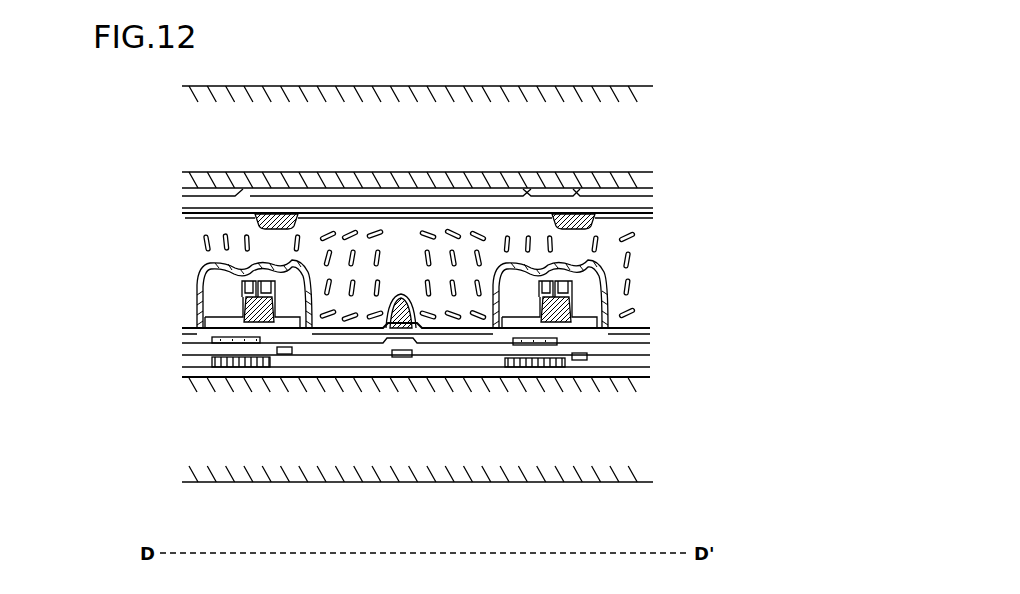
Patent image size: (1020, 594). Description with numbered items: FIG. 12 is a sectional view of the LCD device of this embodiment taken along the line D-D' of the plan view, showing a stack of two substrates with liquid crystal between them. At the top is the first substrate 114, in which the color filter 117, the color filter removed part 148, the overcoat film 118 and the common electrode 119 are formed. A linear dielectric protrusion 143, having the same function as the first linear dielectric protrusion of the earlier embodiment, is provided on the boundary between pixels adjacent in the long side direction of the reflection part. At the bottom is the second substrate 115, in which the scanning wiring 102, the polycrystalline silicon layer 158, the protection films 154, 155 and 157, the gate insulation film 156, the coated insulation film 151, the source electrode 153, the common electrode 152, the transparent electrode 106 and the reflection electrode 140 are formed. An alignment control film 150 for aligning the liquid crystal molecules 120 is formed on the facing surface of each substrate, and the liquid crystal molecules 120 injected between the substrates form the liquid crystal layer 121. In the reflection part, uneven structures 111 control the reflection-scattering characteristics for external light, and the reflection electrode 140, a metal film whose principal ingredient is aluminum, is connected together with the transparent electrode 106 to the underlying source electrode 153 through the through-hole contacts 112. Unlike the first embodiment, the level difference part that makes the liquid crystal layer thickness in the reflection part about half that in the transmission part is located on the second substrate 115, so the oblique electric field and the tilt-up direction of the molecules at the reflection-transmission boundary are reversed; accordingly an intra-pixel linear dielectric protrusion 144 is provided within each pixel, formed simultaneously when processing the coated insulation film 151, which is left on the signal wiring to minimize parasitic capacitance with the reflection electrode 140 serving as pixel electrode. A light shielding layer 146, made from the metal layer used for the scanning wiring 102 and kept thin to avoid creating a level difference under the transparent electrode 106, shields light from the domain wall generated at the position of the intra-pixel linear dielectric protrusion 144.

The first substrate 114 is at (627, 135).
The overcoat film 118 is at (640, 205).
The color filter 117 is at (458, 195).
The color filter removed part 148 is at (555, 192).
The linear dielectric protrusion 143 is at (280, 220).
The common electrode 119 is at (183, 215).
The alignment control film 150 is at (185, 219).
The liquid crystal layer 121 is at (640, 243).
The liquid crystal molecules 120 is at (627, 265).
The reflection electrode 140 is at (200, 268).
The through-hole contact 112 is at (253, 325).
The scanning wiring 102 is at (572, 300).
The light shielding layer 146 is at (398, 322).
The intra-pixel linear dielectric protrusion 144 is at (404, 318).
The source electrode 153 is at (578, 297).
The protection film 154 is at (612, 325).
The protection film 155 is at (643, 352).
The common electrode 152 is at (203, 340).
The uneven structure 111 is at (512, 277).
The gate insulation film 156 is at (653, 373).
The coated insulation film 151 is at (282, 333).
The transparent electrode 106 is at (337, 330).
The protection film 157 is at (653, 377).
The polycrystalline silicon layer 158 is at (192, 378).
The second substrate 115 is at (615, 430).